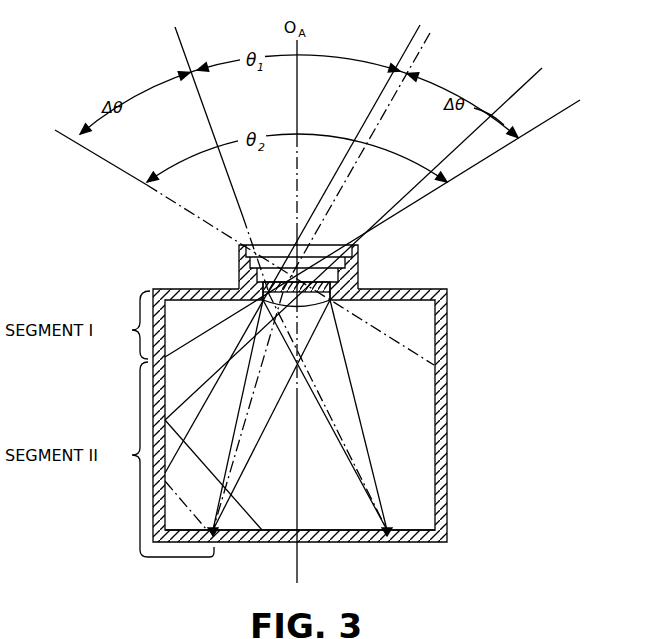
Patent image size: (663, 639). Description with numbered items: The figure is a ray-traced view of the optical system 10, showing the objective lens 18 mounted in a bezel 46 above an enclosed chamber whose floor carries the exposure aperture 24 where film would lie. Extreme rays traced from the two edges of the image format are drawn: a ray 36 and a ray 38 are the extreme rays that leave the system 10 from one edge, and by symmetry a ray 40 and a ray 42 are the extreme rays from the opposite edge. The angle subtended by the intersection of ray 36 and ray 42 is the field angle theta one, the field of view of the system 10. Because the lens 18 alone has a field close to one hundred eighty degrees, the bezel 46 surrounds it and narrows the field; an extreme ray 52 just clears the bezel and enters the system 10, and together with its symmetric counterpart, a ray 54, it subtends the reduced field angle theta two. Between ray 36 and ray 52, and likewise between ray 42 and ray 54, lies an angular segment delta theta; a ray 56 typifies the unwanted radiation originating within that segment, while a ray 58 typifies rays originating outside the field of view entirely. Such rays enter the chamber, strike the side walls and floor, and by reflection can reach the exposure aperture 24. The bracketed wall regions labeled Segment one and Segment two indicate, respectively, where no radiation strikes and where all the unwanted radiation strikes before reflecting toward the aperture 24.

The system 10 is at (452, 374).
The objective lens 18 is at (323, 302).
The exposure aperture 24 is at (357, 541).
The ray 36 is at (426, 46).
The ray 38 is at (249, 390).
The ray 40 is at (362, 418).
The ray 42 is at (184, 57).
The bezel 46 is at (360, 270).
The extreme ray 52 is at (543, 127).
The ray 54 is at (84, 148).
The ray 56 is at (535, 75).
The ray 58 is at (407, 62).